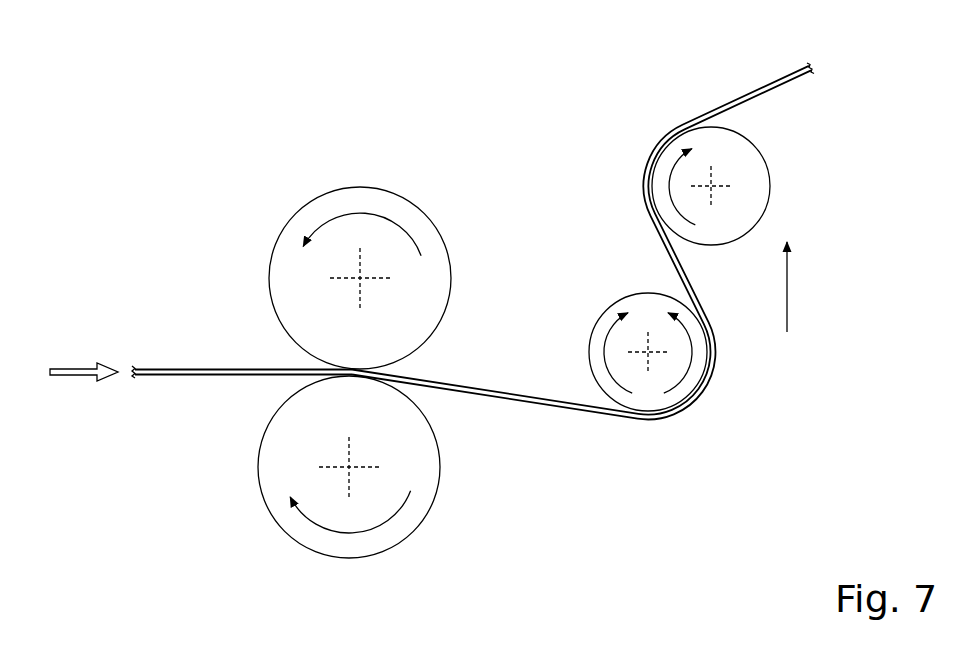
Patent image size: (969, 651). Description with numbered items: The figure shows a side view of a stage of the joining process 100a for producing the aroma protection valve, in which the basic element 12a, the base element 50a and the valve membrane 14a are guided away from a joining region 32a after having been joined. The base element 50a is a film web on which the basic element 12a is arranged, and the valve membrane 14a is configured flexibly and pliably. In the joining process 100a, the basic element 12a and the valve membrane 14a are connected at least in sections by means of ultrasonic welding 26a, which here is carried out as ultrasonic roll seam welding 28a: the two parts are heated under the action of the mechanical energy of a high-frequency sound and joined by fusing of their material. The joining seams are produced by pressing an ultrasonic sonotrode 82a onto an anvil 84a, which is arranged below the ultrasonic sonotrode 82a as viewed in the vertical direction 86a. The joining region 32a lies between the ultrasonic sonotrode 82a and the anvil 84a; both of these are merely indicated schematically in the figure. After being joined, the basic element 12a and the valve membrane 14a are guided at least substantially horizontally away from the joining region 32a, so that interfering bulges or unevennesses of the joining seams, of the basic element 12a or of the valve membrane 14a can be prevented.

The joining process 100a is at (118, 121).
The ultrasonic welding 26a is at (188, 151).
The ultrasonic roll seam welding 28a is at (252, 187).
The ultrasonic sonotrode 82a is at (423, 283).
The anvil 84a is at (410, 455).
The joining region 32a is at (406, 367).
The basic element 12a is at (145, 378).
The base element 50a is at (185, 378).
The valve membrane 14a is at (135, 373).
The vertical direction 86a is at (790, 291).